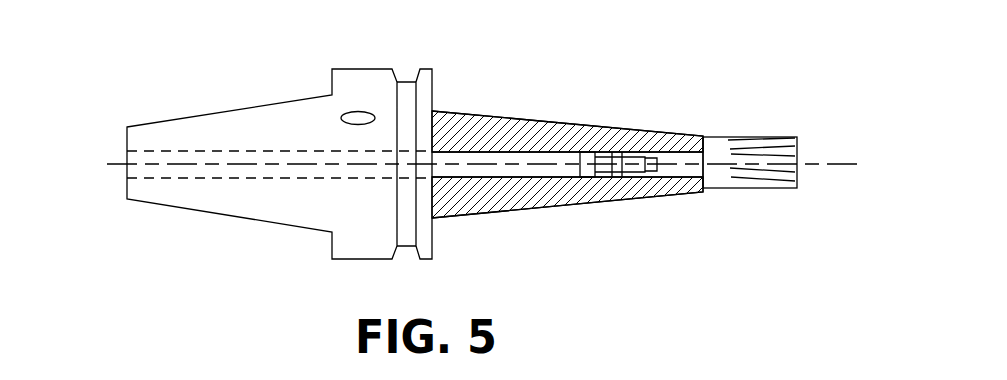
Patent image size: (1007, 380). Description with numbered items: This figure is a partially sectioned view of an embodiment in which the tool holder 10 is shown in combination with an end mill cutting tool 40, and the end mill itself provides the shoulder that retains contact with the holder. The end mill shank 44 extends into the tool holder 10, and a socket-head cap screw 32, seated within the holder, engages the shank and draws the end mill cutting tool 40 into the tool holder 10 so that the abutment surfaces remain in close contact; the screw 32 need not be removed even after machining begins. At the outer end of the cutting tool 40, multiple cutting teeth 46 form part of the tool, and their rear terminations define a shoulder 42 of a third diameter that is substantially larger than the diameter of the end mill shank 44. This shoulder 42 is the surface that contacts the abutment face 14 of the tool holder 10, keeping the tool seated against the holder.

The tool holder 10 is at (256, 125).
The abutment face 14 is at (703, 178).
The socket-head cap screw 32 is at (593, 174).
The end mill cutting tool 40 is at (748, 127).
The shoulder 42 is at (714, 136).
The end mill shank 44 is at (683, 173).
The cutting teeth 46 is at (770, 175).